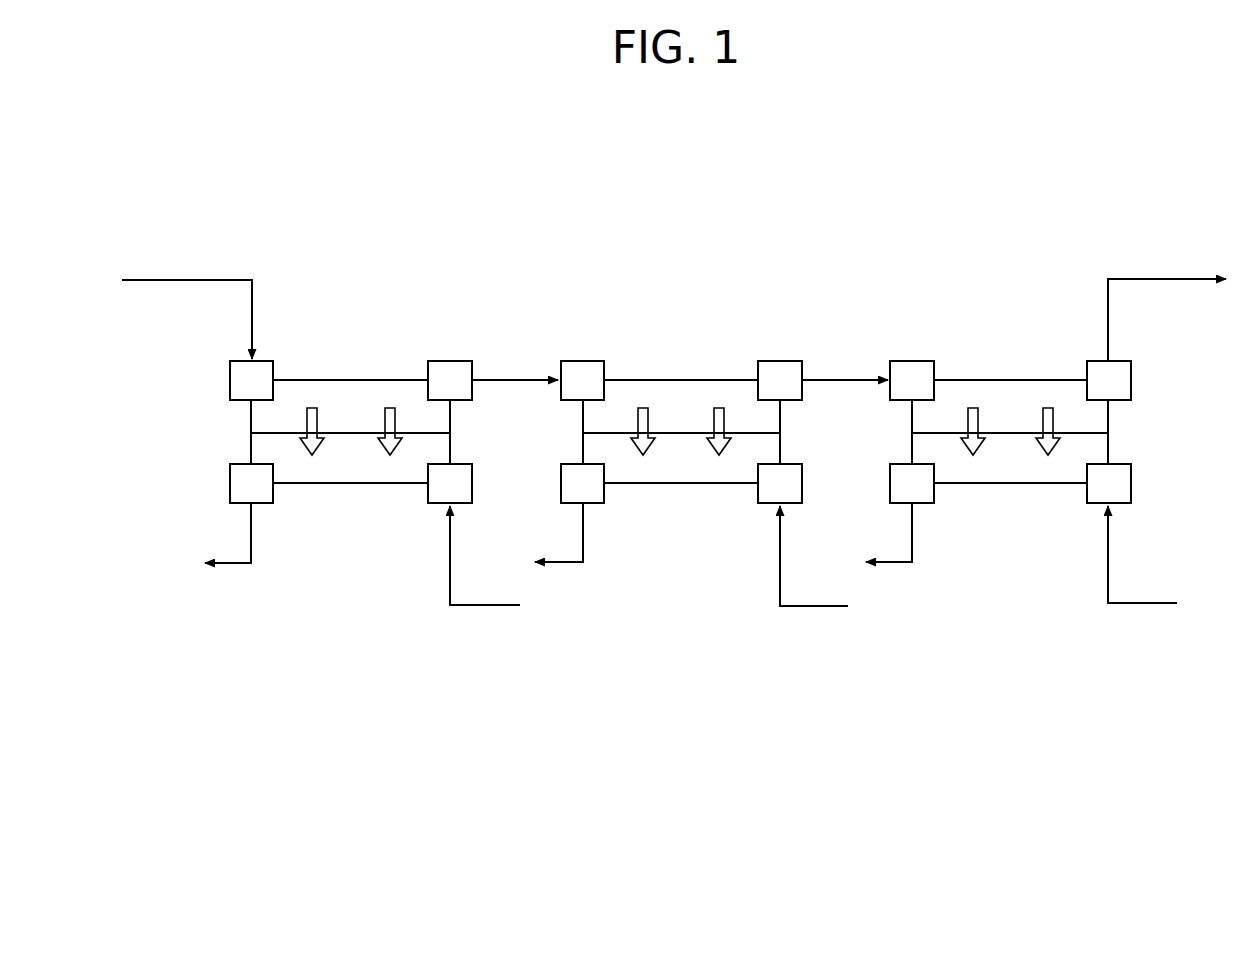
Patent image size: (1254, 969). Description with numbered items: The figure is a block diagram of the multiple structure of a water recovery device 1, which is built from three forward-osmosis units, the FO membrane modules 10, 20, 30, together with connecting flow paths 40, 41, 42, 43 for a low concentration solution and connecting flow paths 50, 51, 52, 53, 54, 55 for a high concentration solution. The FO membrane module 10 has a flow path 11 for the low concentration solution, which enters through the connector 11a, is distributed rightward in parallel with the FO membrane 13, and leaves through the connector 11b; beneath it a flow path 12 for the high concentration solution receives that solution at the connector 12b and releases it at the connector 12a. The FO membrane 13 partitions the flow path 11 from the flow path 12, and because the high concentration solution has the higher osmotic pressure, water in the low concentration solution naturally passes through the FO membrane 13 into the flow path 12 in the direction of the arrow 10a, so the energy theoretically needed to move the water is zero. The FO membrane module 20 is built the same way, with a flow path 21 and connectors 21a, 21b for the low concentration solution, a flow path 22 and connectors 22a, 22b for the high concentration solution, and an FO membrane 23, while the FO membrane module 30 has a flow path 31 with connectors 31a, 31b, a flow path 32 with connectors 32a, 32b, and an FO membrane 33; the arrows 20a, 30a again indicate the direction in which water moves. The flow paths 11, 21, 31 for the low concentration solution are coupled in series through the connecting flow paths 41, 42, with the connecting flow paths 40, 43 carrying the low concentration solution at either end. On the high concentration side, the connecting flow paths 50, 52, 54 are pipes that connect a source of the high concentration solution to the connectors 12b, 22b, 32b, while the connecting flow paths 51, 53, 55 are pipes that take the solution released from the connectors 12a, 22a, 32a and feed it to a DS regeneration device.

The water recovery device 1 is at (688, 206).
The FO membrane module 10 is at (353, 290).
The FO membrane module 20 is at (682, 290).
The FO membrane module 30 is at (1011, 290).
The arrow 10a is at (311, 406).
The arrow 20a is at (642, 406).
The arrow 30a is at (971, 406).
The flow path for a low concentration solution 11 is at (350, 378).
The flow path for a high concentration solution 12 is at (352, 486).
The FO membrane 13 is at (374, 425).
The flow path for a low concentration solution 21 is at (680, 378).
The flow path for a high concentration solution 22 is at (683, 486).
The FO membrane 23 is at (705, 425).
The flow path for a low concentration solution 31 is at (1011, 378).
The flow path for a high concentration solution 32 is at (1013, 486).
The FO membrane 33 is at (1034, 425).
The connector for a low concentration solution 11a is at (262, 360).
The connector for a low concentration solution 11b is at (447, 360).
The connector for a high concentration solution 12a is at (239, 463).
The connector for a high concentration solution 12b is at (461, 463).
The connector for a low concentration solution 21a is at (581, 360).
The connector for a low concentration solution 21b is at (778, 360).
The connector for a high concentration solution 22a is at (571, 463).
The connector for a high concentration solution 22b is at (791, 463).
The connector for a low concentration solution 31a is at (910, 360).
The connector for a low concentration solution 31b is at (1099, 360).
The connector for a high concentration solution 32a is at (900, 463).
The connector for a high concentration solution 32b is at (1120, 463).
The connecting flow path for a low concentration solution 40 is at (135, 278).
The connecting flow path for a low concentration solution 41 is at (514, 378).
The connecting flow path for a low concentration solution 42 is at (844, 378).
The connecting flow path for a low concentration solution 43 is at (1210, 278).
The connecting flow path for a high concentration solution 50 is at (522, 607).
The connecting flow path for a high concentration solution 51 is at (256, 565).
The connecting flow path for a high concentration solution 52 is at (852, 608).
The connecting flow path for a high concentration solution 53 is at (588, 564).
The connecting flow path for a high concentration solution 54 is at (1178, 603).
The connecting flow path for a high concentration solution 55 is at (917, 564).